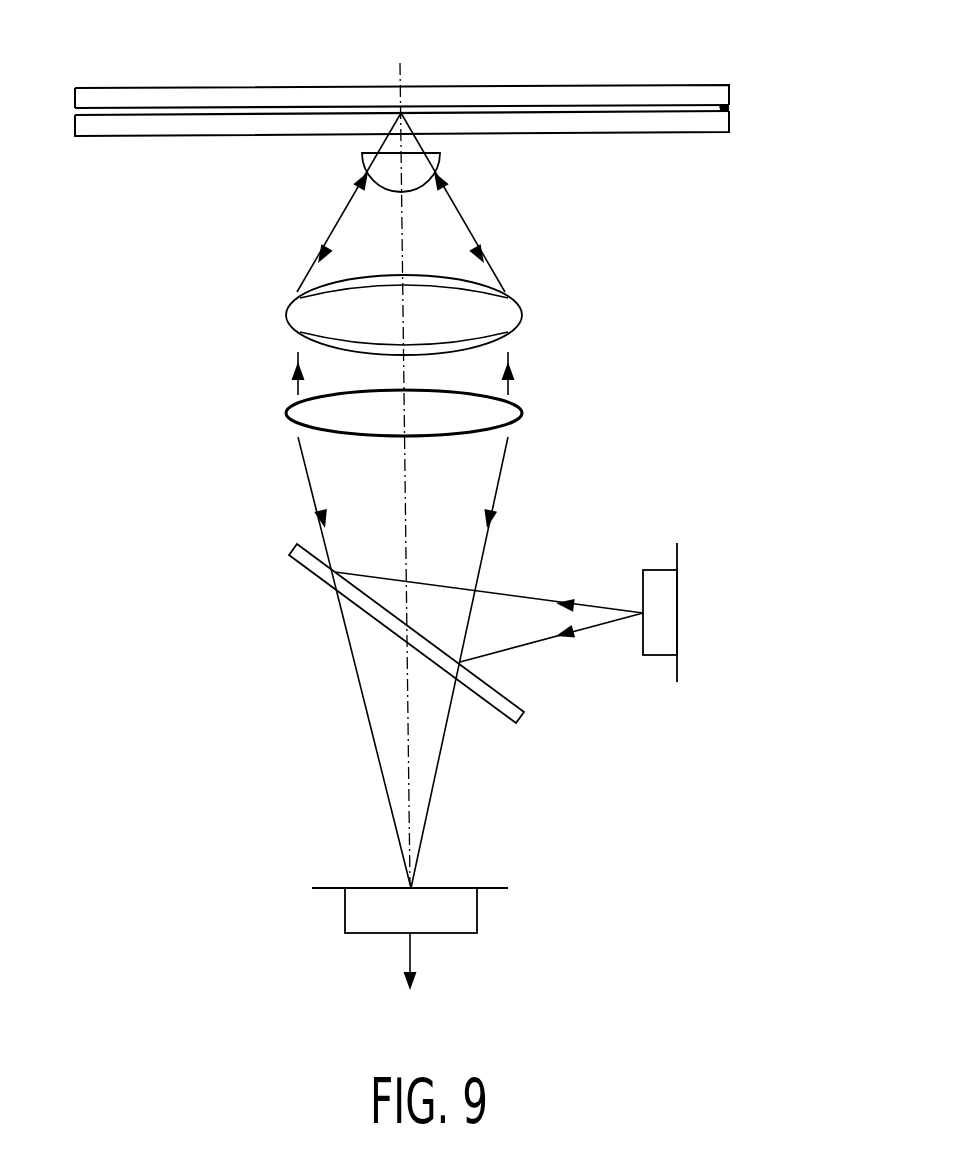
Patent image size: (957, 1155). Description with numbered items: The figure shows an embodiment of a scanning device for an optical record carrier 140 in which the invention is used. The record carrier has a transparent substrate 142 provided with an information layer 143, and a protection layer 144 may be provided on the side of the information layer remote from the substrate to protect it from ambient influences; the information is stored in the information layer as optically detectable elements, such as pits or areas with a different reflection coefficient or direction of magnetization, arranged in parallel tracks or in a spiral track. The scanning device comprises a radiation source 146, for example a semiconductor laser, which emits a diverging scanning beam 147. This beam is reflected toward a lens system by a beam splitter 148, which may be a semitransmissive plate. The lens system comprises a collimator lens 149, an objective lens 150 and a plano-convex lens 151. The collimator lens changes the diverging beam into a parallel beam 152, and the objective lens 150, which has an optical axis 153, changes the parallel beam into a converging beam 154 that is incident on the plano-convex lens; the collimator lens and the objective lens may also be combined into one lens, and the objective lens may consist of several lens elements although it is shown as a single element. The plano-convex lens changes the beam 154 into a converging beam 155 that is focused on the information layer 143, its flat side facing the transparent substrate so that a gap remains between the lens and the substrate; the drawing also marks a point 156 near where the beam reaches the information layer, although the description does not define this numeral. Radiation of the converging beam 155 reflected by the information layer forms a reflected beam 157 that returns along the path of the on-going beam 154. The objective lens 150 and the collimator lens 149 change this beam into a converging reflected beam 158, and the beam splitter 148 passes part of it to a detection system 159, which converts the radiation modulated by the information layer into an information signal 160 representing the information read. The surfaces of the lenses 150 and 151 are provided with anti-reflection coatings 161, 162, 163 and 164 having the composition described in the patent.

The optical record carrier 140 is at (574, 68).
The transparent substrate 142 is at (710, 126).
The information layer 143 is at (729, 107).
The protection layer 144 is at (710, 96).
The radiation source 146 is at (664, 657).
The diverging scanning beam 147 is at (590, 603).
The beam splitter 148 is at (307, 558).
The collimator lens 149 is at (312, 415).
The objective lens 150 is at (312, 317).
The plano-convex lens 151 is at (362, 157).
The parallel beam 152 is at (517, 373).
The optical axis 153 is at (398, 64).
The converging beam 154 is at (347, 206).
The converging beam 155 is at (412, 127).
The focal spot 156 is at (403, 110).
The reflected beam 157 is at (318, 258).
The converging reflected beam 158 is at (318, 520).
The detection system 159 is at (457, 912).
The information signal 160 is at (412, 955).
The anti-reflection coating 161 is at (490, 437).
The anti-reflection coating 162 is at (488, 392).
The anti-reflection coating 163 is at (490, 350).
The anti-reflection coating 164 is at (490, 284).